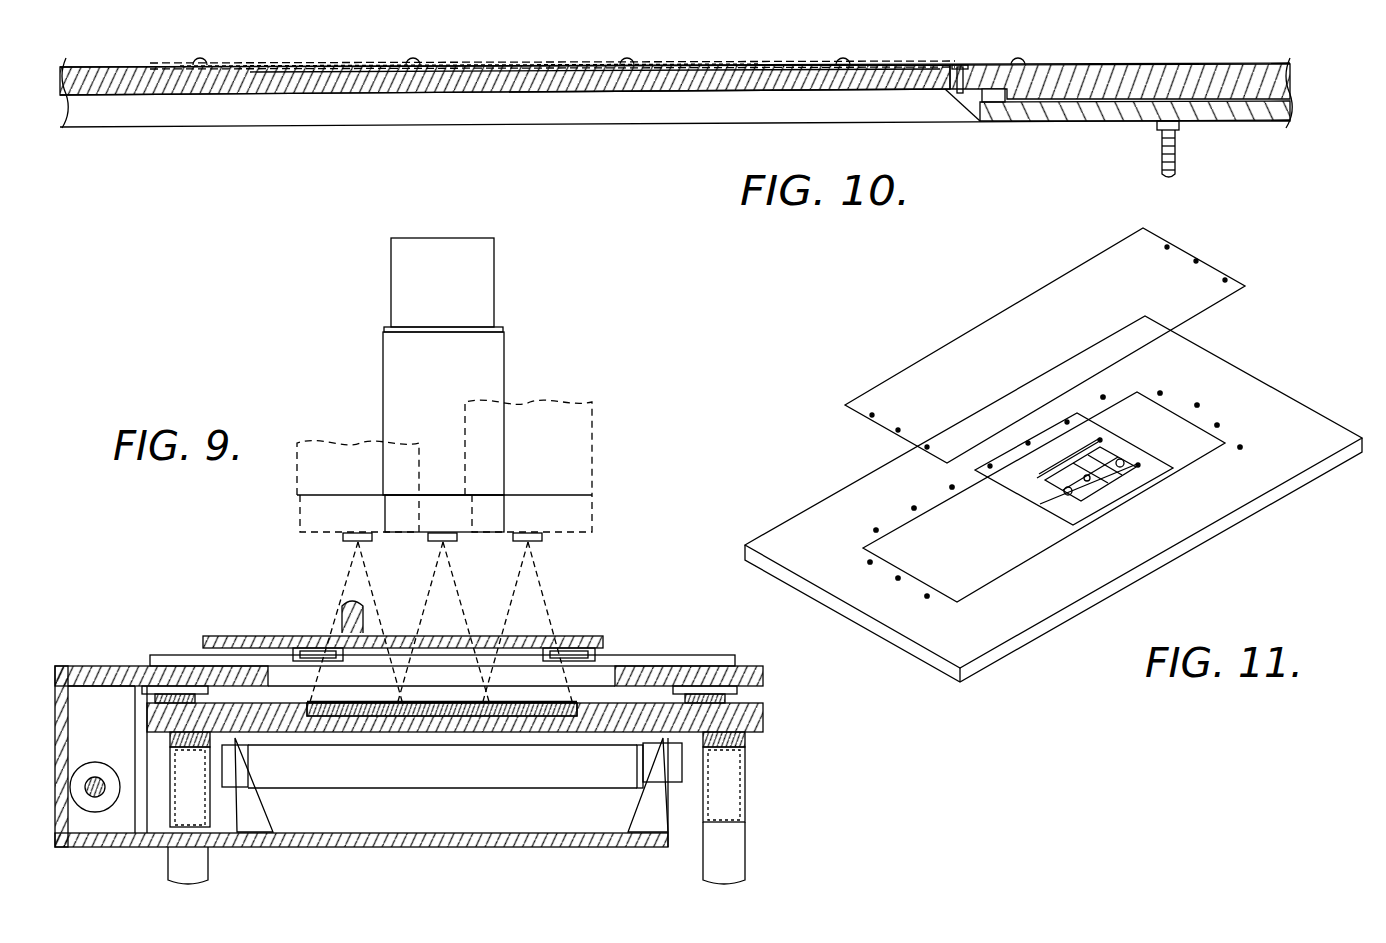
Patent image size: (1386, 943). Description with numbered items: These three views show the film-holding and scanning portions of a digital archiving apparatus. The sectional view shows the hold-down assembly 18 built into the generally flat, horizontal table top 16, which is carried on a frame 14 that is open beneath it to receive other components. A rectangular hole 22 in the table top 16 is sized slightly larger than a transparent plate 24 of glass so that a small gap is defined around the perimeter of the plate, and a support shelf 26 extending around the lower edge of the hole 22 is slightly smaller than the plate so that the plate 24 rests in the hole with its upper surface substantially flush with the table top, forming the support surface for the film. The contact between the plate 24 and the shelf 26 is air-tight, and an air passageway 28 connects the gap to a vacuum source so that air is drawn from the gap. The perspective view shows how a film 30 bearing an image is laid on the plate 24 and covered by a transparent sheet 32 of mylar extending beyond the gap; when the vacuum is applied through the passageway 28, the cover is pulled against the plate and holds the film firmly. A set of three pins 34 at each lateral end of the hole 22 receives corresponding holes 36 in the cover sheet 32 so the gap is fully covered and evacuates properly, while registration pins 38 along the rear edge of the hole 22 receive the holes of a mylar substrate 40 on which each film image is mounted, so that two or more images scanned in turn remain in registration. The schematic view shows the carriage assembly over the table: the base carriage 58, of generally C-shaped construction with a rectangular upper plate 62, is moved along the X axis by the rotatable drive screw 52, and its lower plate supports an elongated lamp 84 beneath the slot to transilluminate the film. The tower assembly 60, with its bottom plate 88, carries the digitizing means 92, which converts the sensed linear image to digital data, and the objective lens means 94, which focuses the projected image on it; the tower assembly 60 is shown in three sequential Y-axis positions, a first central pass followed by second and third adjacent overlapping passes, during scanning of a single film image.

In FIG. 9, the frame 14 is at (746, 776).
In FIG. 10, the table top 16 is at (1210, 70).
In FIG. 9, the table top 16 is at (764, 720).
In FIG. 11, the table top 16 is at (1203, 542).
In FIG. 10, the hold-down assembly 18 is at (1090, 60).
In FIG. 11, the hold-down assembly 18 is at (1248, 376).
In FIG. 10, the rectangular hole 22 is at (955, 75).
In FIG. 10, the transparent plate 24 is at (473, 87).
In FIG. 9, the transparent plate 24 is at (378, 714).
In FIG. 11, the transparent plate 24 is at (980, 580).
In FIG. 10, the support shelf 26 is at (945, 95).
In FIG. 10, the air passageway 28 is at (1133, 102).
In FIG. 10, the film 30 is at (697, 55).
In FIG. 9, the film 30 is at (538, 703).
In FIG. 11, the film 30 is at (1105, 458).
In FIG. 10, the transparent sheet 32 is at (726, 62).
In FIG. 11, the transparent sheet 32 is at (1003, 322).
In FIG. 10, the pins 34 is at (1017, 56).
In FIG. 11, the pins 34 is at (1198, 404).
In FIG. 11, the holes 36 is at (1197, 262).
In FIG. 10, the registration pins 38 is at (845, 57).
In FIG. 11, the registration pins 38 is at (912, 508).
In FIG. 10, the substrate 40 is at (585, 72).
In FIG. 11, the substrate 40 is at (1012, 484).
In FIG. 9, the drive screw 52 is at (84, 772).
In FIG. 9, the base carriage 58 is at (118, 662).
In FIG. 9, the tower assembly 60 is at (258, 560).
In FIG. 9, the upper plate 62 is at (763, 676).
In FIG. 9, the lamp 84 is at (513, 788).
In FIG. 9, the bottom plate 88 is at (258, 635).
In FIG. 9, the digitizing means 92 is at (512, 346).
In FIG. 9, the objective lens means 94 is at (455, 541).